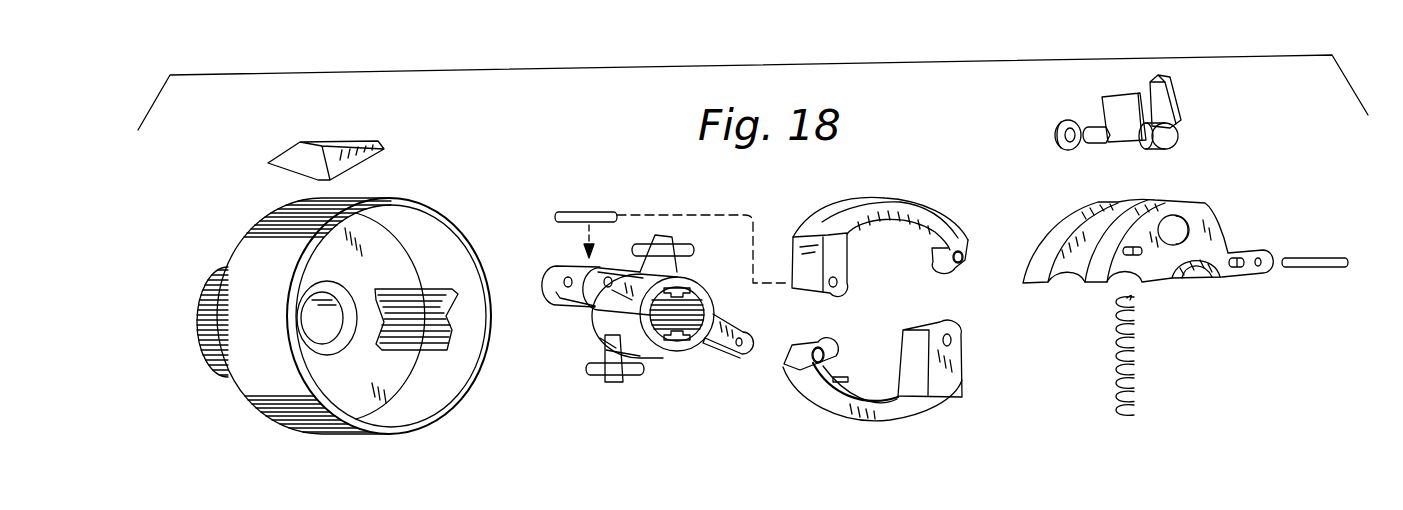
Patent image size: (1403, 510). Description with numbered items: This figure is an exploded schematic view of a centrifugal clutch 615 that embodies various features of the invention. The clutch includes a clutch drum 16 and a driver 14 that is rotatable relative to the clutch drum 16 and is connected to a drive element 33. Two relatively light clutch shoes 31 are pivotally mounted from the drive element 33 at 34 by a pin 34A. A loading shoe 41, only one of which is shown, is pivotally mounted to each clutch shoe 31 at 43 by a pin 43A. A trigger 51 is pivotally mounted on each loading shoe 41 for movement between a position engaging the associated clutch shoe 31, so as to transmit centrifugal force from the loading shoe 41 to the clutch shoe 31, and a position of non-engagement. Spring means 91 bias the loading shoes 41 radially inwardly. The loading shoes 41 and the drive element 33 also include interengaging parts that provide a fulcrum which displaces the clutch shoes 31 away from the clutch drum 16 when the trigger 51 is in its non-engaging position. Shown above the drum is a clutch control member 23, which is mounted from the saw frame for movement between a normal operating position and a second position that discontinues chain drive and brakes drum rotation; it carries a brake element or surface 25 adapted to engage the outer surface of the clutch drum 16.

The driver 14 is at (430, 323).
The clutch drum 16 is at (272, 398).
The clutch control member 23 is at (270, 172).
The brake element or surface 25 is at (348, 167).
The clutch shoe 31 is at (840, 205).
The drive element 33 is at (613, 322).
The pivot of clutch shoe 34 is at (605, 284).
The pin 34A is at (590, 211).
The loading shoe 41 is at (1092, 223).
The pivot of loading shoe 43 is at (956, 263).
The pin 43A is at (1323, 258).
The trigger 51 is at (1128, 125).
The spring means 91 is at (1120, 362).
The centrifugal clutch 615 is at (1167, 398).